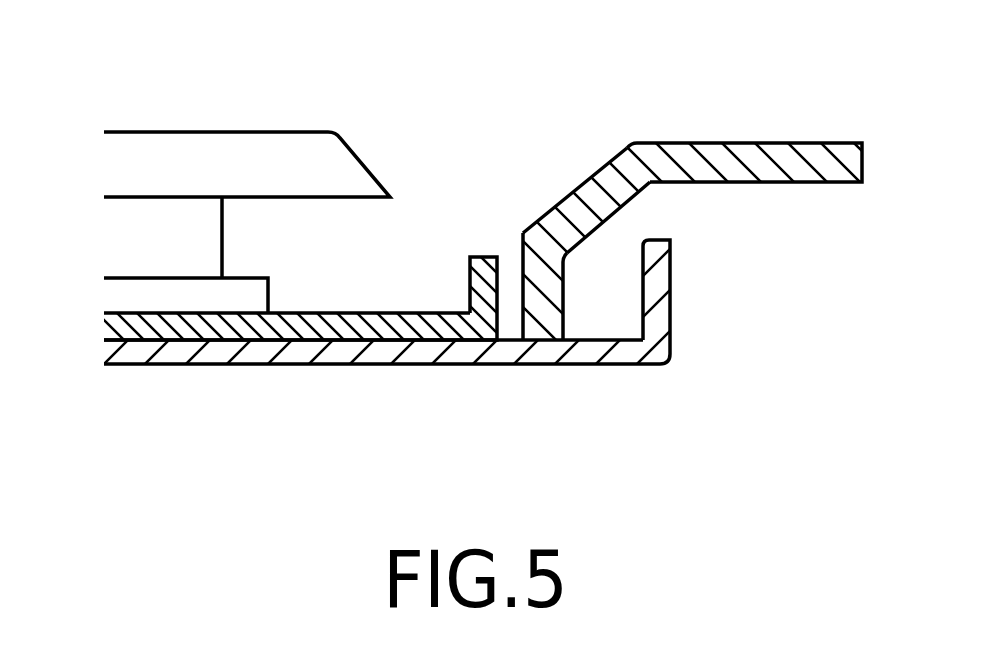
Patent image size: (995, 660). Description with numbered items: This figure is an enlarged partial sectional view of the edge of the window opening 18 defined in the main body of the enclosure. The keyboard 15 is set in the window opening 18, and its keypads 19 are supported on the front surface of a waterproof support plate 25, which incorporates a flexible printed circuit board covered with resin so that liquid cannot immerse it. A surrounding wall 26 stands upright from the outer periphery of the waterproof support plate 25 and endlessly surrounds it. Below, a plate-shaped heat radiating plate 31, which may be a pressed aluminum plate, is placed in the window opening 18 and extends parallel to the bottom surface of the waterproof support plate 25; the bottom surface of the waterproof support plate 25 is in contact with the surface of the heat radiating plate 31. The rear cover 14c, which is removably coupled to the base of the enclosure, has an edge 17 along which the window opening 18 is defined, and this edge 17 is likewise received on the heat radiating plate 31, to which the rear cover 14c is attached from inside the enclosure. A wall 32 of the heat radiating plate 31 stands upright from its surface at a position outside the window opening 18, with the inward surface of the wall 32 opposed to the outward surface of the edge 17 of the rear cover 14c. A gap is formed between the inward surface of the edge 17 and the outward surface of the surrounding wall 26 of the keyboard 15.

The rear cover 14c is at (765, 143).
The keyboard 15 is at (168, 98).
The edge 17 is at (521, 257).
The window opening 18 is at (523, 231).
The keypads 19 is at (297, 132).
The waterproof support plate 25 is at (348, 313).
The surrounding wall 26 is at (470, 266).
The heat radiating plate 31 is at (385, 365).
The wall 32 is at (641, 246).